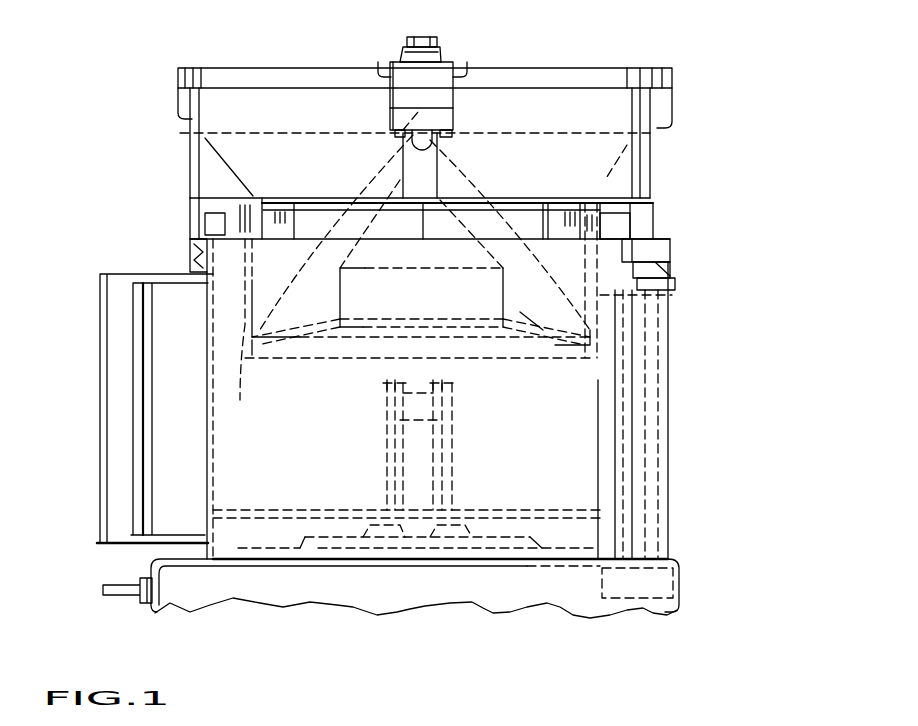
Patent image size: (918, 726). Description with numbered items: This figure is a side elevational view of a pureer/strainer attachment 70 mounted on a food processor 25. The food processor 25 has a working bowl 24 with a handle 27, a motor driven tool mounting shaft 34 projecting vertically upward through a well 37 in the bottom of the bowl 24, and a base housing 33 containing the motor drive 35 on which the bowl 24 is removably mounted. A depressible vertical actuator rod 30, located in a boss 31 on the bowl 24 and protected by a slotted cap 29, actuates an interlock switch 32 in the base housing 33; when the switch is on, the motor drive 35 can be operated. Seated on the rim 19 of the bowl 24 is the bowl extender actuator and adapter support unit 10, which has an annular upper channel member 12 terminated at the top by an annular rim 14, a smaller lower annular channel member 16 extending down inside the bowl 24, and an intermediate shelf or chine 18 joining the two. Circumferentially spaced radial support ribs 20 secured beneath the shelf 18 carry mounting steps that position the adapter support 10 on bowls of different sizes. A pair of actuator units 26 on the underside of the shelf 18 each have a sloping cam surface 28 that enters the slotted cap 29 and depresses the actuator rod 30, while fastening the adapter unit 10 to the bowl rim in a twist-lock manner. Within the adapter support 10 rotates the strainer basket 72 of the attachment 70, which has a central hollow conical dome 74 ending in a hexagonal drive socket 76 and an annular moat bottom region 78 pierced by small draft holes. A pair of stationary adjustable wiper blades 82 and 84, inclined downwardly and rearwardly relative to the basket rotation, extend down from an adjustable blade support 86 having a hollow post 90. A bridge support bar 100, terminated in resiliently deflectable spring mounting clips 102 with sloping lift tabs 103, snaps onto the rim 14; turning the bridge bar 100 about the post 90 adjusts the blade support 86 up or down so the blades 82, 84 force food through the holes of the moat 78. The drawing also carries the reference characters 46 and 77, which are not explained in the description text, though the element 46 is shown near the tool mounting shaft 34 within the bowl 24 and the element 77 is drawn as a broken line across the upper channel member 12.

The bowl extender actuator and adapter support unit 10 is at (656, 169).
The annular upper channel member 12 is at (655, 191).
The annular rim 14 is at (673, 79).
The lower annular channel member 16 is at (240, 388).
The intermediate shelf or chine 18 is at (322, 208).
The rim of working bowl 19 is at (532, 233).
The radial support ribs 20 is at (283, 217).
The working bowl 24 is at (207, 413).
The food processor 25 is at (734, 526).
The actuator units 26 is at (188, 253).
The handle 27 is at (120, 397).
The sloping cam surface 28 is at (675, 285).
The slotted cap 29 is at (670, 264).
The actuator rod 30 is at (652, 394).
The boss 31 is at (665, 444).
The interlock switch 32 is at (655, 584).
The base housing 33 is at (580, 603).
The tool mounting shaft 34 is at (440, 463).
The motor drive 35 is at (505, 538).
The well 37 is at (455, 430).
The column cap 46 is at (395, 386).
The pureer/strainer attachment 70 is at (600, 58).
The rotating strainer basket 72 is at (226, 176).
The conical dome 74 is at (458, 301).
The hexagonal drive socket 76 is at (468, 173).
The liquid level line 77 is at (190, 131).
The annular moat bottom region 78 is at (677, 296).
The wiper blade 82 is at (539, 301).
The wiper blade 84 is at (318, 301).
The adjustable blade support 86 is at (560, 108).
The hollow post 90 is at (441, 40).
The bridge support bar 100 is at (407, 44).
The spring mounting clips 102 is at (413, 93).
The lift tabs 103 is at (447, 123).